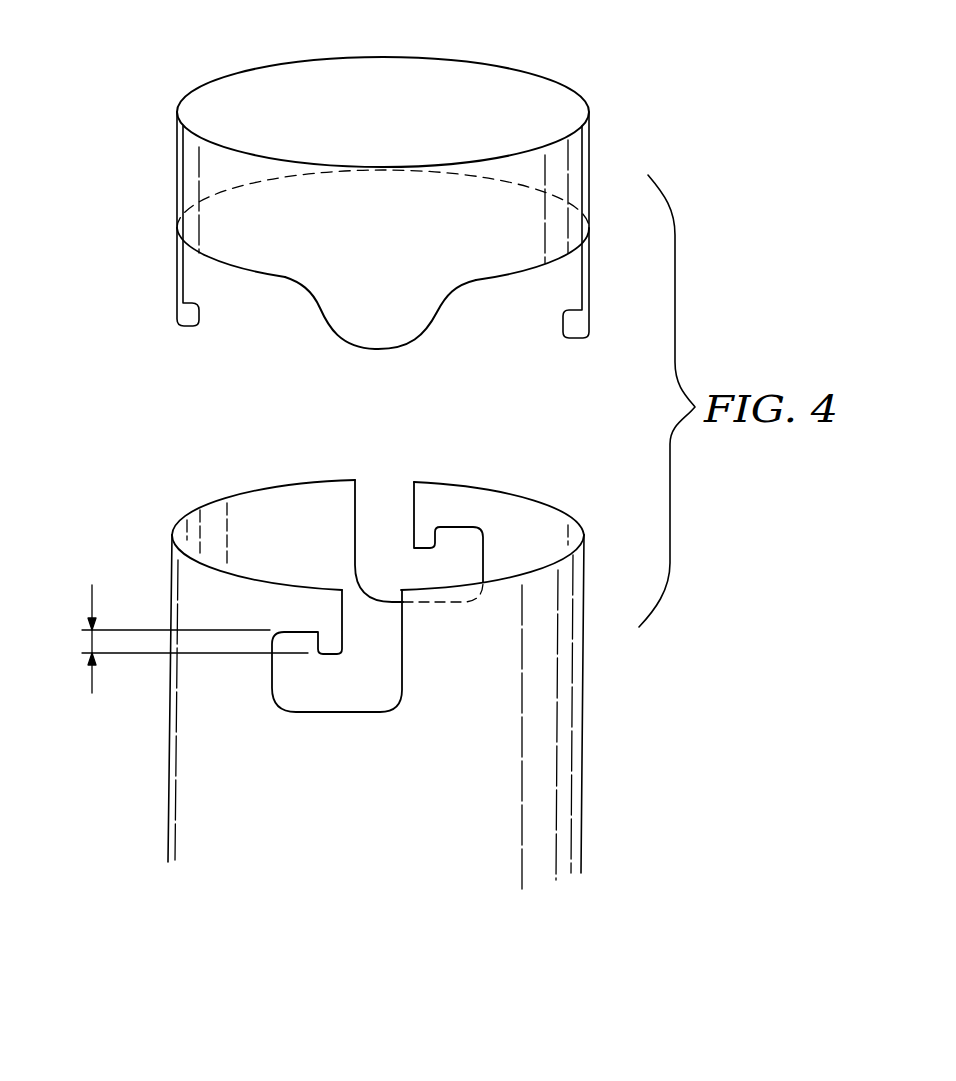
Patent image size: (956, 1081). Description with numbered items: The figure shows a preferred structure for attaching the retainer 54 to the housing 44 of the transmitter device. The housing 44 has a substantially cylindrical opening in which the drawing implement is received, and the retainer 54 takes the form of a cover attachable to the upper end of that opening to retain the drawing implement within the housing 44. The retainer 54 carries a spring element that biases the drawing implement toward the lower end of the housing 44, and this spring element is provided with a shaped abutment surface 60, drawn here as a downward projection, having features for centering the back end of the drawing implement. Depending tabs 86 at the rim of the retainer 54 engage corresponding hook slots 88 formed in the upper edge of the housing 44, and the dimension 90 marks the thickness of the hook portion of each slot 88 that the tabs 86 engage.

The retainer 54 is at (577, 160).
The abutment surface 60 is at (400, 320).
The locking tab 86 is at (188, 322).
The housing 44 is at (552, 720).
The hook slot 88 is at (370, 683).
The hook thickness 90 is at (90, 638).